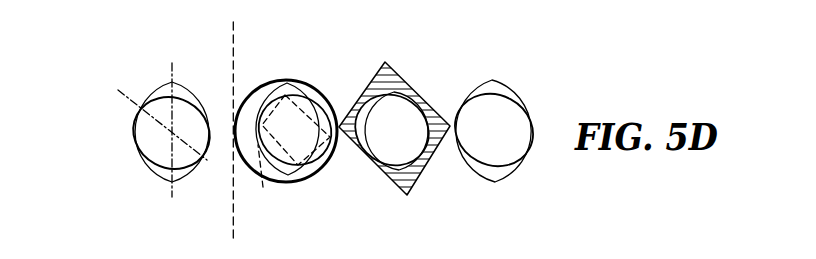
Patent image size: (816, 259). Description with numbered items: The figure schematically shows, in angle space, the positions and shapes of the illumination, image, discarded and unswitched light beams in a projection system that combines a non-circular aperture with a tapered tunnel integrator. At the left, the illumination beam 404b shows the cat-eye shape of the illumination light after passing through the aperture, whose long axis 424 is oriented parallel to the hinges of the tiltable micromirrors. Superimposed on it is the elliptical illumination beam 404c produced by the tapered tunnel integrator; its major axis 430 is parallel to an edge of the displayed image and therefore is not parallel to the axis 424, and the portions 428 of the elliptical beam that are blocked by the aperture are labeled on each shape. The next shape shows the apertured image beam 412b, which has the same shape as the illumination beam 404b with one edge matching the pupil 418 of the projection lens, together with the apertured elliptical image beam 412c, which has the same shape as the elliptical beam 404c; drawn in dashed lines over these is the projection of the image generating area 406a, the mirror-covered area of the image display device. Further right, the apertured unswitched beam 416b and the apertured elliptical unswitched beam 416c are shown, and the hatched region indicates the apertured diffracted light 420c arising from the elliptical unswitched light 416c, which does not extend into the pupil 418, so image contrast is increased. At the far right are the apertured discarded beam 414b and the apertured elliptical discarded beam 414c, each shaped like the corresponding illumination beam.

The illumination beam 404b is at (163, 85).
The elliptical illumination beam 404c is at (203, 82).
The axis of the aperture 424 is at (170, 190).
The major axis of the elliptical beam 430 is at (122, 88).
The blocked portions of the elliptical beam 428 is at (137, 113).
The pupil 418 is at (248, 93).
The apertured image beam 412b is at (286, 88).
The apertured elliptical image beam 412c is at (328, 82).
The image generating area 406a is at (263, 180).
The apertured diffracted light 420c is at (390, 183).
The apertured unswitched beam 416b is at (382, 75).
The apertured elliptical unswitched beam 416c is at (407, 85).
The apertured discarded beam 414b is at (498, 77).
The apertured elliptical discarded beam 414c is at (503, 100).